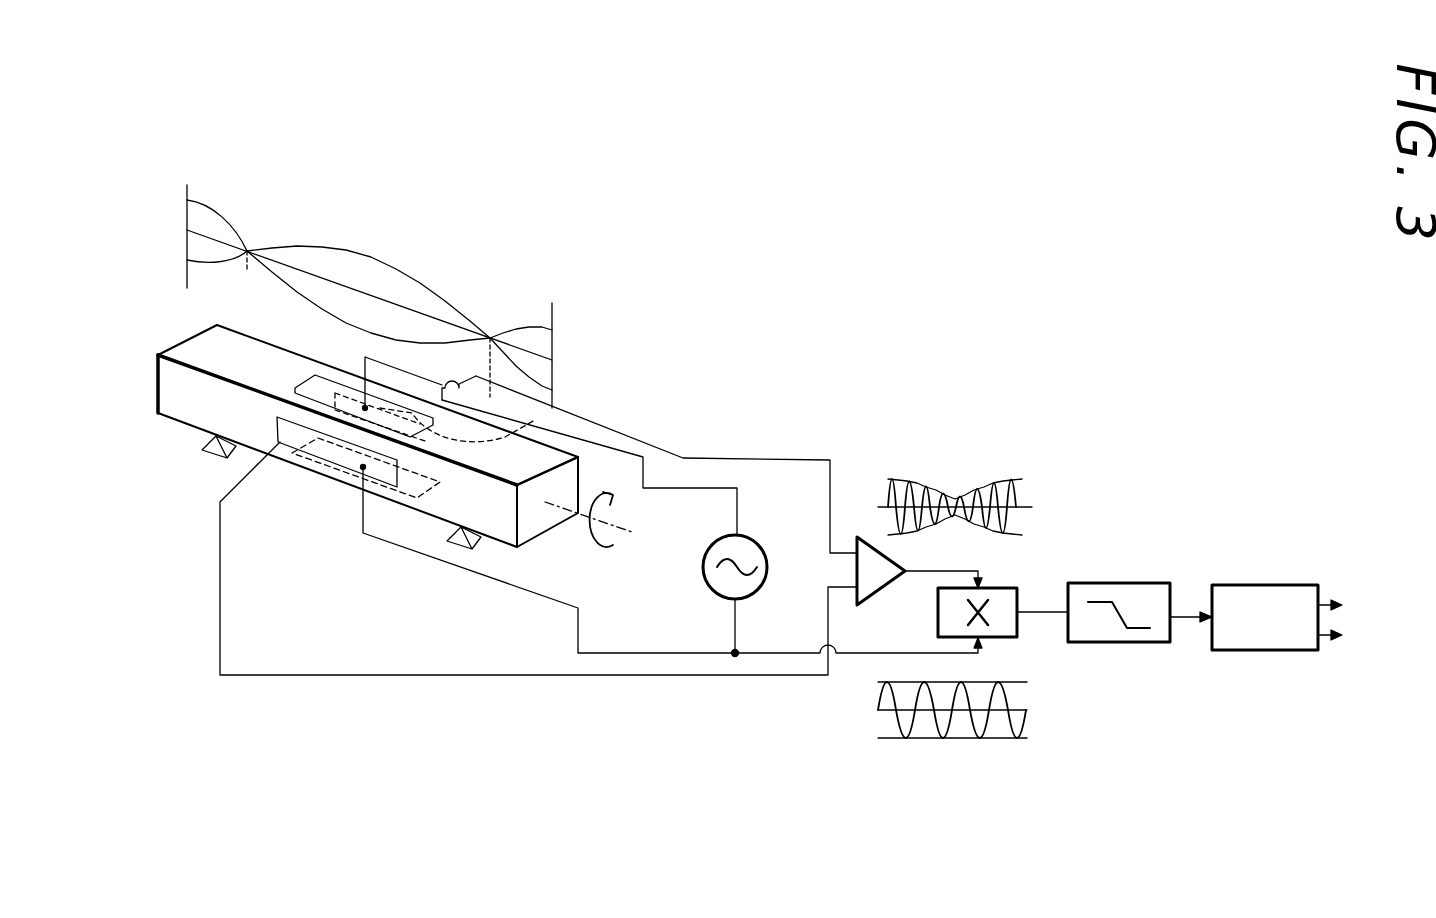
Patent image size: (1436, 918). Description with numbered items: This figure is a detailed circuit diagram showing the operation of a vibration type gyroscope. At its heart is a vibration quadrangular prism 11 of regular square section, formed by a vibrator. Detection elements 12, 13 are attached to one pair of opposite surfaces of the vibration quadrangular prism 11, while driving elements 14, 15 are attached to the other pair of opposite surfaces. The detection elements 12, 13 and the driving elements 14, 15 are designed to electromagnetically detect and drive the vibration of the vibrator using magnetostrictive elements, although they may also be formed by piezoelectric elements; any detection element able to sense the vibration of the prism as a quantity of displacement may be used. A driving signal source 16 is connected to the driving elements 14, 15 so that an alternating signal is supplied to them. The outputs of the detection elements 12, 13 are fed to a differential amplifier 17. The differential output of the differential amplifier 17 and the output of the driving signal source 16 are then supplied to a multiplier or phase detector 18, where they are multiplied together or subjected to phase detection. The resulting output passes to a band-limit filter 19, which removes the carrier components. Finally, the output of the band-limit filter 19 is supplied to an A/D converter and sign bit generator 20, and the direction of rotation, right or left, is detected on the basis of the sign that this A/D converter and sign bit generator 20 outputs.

The vibration quadrangular prism 11 is at (165, 418).
The detection element 12 is at (282, 433).
The detection element 13 is at (535, 420).
The driving element 14 is at (307, 378).
The driving element 15 is at (338, 473).
The driving signal source 16 is at (703, 568).
The differential amplifier 17 is at (868, 534).
The multiplier or phase detector 18 is at (1012, 585).
The band-limit filter 19 is at (1162, 583).
The A/D converter and sign bit generator 20 is at (1214, 650).